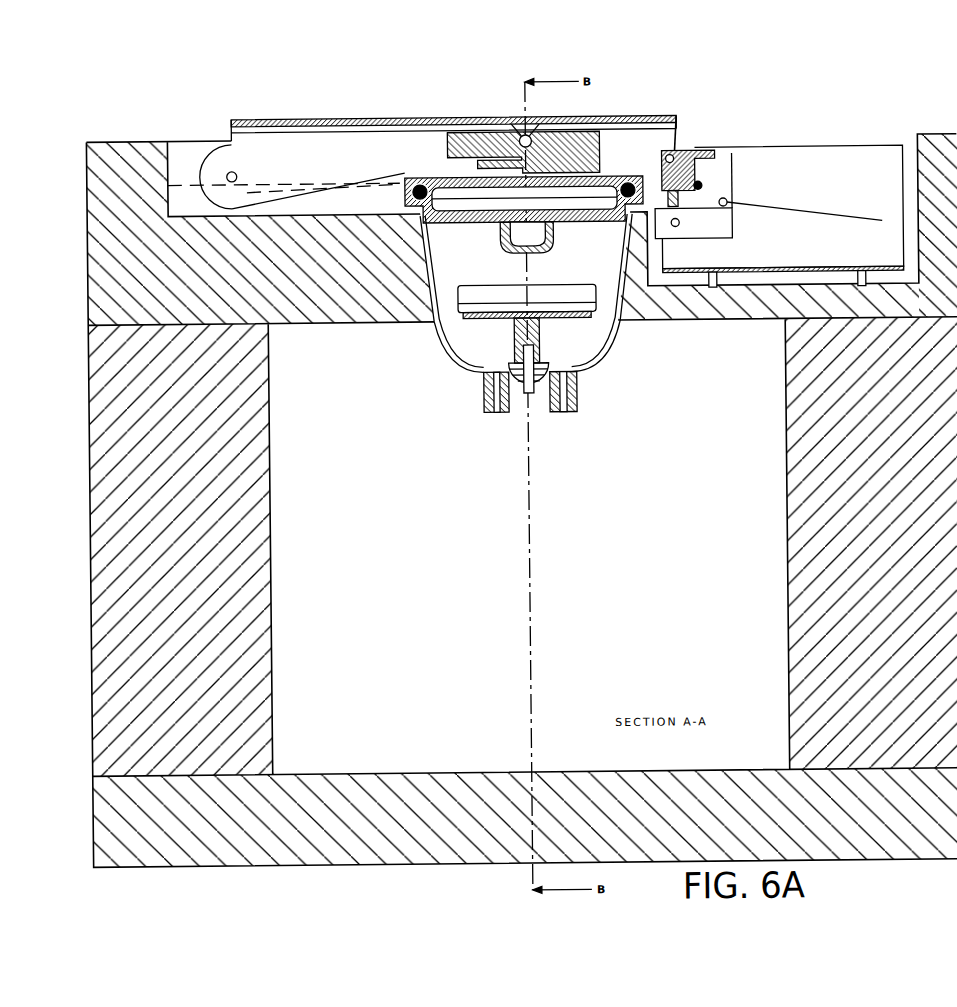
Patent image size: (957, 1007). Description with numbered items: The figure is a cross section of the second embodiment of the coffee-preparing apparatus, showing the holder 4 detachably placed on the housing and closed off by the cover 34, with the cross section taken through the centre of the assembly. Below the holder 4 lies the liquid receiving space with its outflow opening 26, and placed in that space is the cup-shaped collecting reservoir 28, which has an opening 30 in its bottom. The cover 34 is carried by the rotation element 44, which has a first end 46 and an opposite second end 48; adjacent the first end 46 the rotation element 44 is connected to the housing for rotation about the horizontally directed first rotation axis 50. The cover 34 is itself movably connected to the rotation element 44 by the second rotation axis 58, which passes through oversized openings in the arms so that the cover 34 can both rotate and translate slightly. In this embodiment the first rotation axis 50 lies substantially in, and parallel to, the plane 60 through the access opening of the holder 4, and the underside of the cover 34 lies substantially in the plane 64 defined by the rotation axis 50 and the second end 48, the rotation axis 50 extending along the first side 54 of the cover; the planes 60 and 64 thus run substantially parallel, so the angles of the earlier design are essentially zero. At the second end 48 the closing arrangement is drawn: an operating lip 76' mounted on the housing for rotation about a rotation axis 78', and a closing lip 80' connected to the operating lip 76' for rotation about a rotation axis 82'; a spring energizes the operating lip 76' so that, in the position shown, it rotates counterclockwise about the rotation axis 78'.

The holder 4 is at (572, 222).
The outflow opening 26 is at (491, 387).
The collecting reservoir 28 is at (542, 318).
The opening 30 is at (570, 312).
The cover 34 is at (430, 267).
The rotation element 44 is at (313, 117).
The first end 46 is at (215, 164).
The second end 48 is at (672, 153).
The first rotation axis 50 is at (237, 173).
The first side 54 is at (577, 143).
The second rotation axis 58 is at (512, 123).
The plane through the access opening 60 is at (357, 184).
The plane defined by the rotation axis and the second end 64 is at (188, 179).
The operating lip 76' is at (801, 208).
The rotation axis 78' is at (694, 287).
The closing lip 80' is at (713, 152).
The rotation axis 82' is at (698, 115).